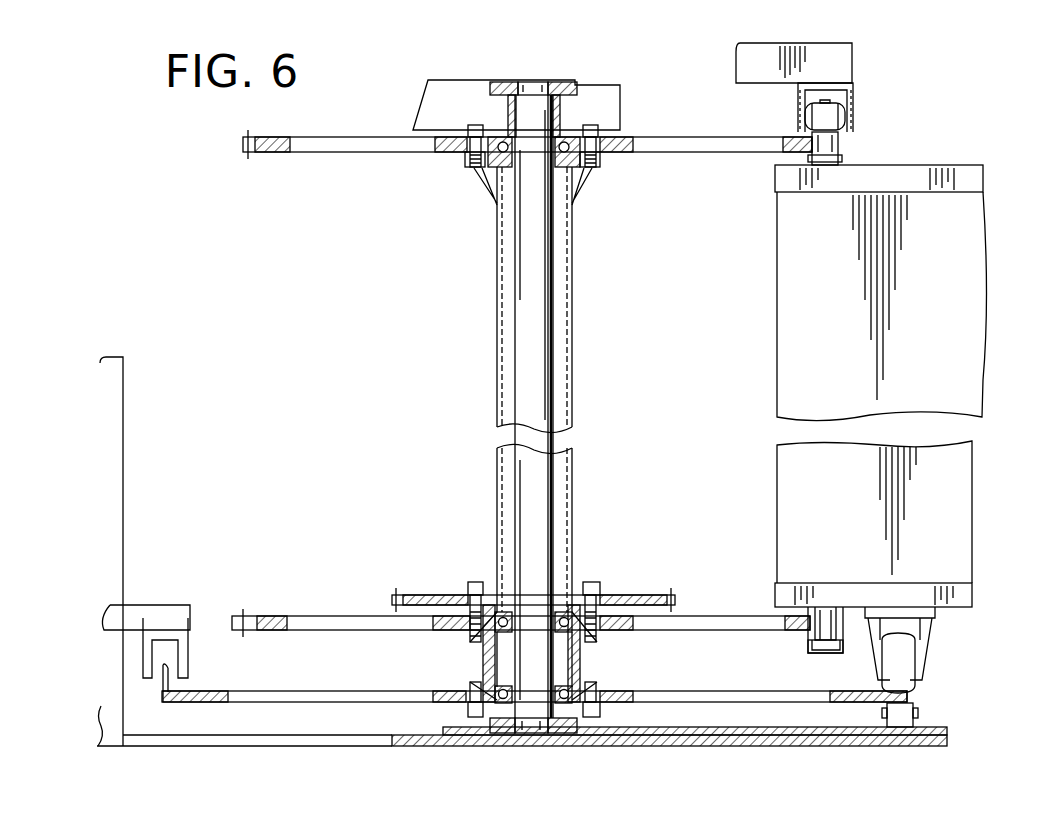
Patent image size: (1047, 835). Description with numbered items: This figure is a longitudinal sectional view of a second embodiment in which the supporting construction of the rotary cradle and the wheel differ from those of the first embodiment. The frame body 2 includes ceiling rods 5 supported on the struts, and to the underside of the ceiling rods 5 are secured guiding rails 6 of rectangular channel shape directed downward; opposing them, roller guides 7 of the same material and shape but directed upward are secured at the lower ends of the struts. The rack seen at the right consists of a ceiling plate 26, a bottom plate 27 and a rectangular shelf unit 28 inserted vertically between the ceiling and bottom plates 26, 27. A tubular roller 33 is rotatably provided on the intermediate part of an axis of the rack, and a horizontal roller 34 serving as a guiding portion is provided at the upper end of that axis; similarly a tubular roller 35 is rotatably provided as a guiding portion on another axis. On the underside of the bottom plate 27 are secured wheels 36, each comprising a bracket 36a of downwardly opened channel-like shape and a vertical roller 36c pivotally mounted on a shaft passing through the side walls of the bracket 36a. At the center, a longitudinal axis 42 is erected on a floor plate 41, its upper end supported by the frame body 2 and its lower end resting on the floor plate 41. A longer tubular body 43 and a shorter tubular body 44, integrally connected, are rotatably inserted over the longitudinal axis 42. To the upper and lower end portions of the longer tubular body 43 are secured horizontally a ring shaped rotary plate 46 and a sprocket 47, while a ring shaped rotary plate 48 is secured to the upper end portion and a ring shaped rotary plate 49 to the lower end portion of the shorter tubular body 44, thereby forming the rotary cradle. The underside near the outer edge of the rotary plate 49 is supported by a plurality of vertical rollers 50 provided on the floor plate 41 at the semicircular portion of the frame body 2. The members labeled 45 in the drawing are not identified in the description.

The frame body 2 is at (626, 83).
The ceiling rods 5 is at (765, 75).
The guiding rails 6 is at (858, 102).
The roller guides 7 is at (826, 653).
The ceiling plate 26 is at (942, 175).
The bottom plate 27 is at (975, 600).
The shelf unit 28 is at (975, 540).
The tubular roller 33 is at (842, 148).
The horizontal roller 34 is at (847, 118).
The roller 35 is at (840, 615).
The wheels 36 is at (925, 650).
The bracket 36a is at (920, 622).
The vertical roller 36c is at (912, 685).
The floor plate 41 is at (645, 735).
The longitudinal axis 42 is at (553, 292).
The longer tubular body 43 is at (572, 390).
The shorter tubular body 44 is at (583, 657).
The brace 45 is at (572, 176).
The ring shaped rotary plate 46 is at (678, 154).
The sprocket 47 is at (650, 595).
The ring shaped rotary plate 48 is at (730, 616).
The ring shaped rotary plate 49 is at (757, 691).
The vertical rollers 50 is at (885, 708).